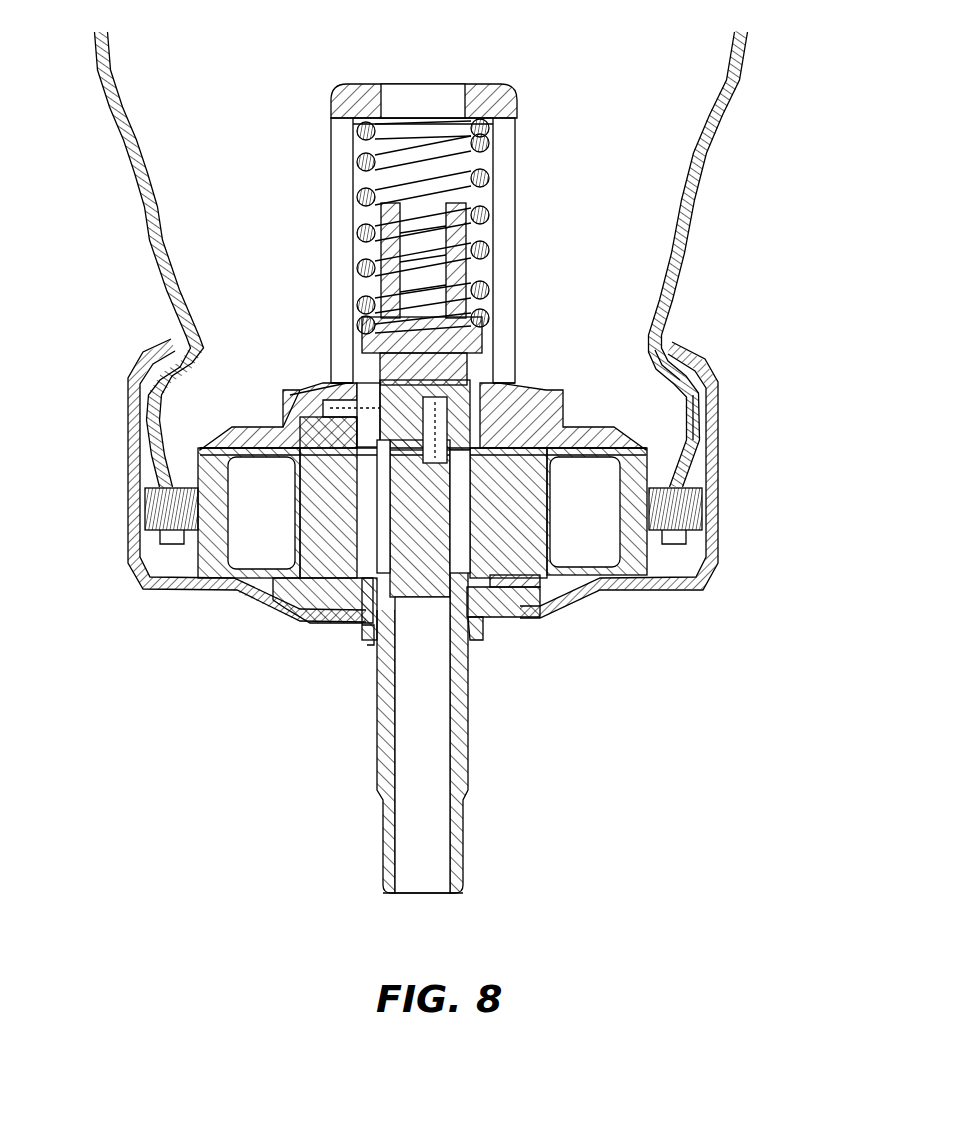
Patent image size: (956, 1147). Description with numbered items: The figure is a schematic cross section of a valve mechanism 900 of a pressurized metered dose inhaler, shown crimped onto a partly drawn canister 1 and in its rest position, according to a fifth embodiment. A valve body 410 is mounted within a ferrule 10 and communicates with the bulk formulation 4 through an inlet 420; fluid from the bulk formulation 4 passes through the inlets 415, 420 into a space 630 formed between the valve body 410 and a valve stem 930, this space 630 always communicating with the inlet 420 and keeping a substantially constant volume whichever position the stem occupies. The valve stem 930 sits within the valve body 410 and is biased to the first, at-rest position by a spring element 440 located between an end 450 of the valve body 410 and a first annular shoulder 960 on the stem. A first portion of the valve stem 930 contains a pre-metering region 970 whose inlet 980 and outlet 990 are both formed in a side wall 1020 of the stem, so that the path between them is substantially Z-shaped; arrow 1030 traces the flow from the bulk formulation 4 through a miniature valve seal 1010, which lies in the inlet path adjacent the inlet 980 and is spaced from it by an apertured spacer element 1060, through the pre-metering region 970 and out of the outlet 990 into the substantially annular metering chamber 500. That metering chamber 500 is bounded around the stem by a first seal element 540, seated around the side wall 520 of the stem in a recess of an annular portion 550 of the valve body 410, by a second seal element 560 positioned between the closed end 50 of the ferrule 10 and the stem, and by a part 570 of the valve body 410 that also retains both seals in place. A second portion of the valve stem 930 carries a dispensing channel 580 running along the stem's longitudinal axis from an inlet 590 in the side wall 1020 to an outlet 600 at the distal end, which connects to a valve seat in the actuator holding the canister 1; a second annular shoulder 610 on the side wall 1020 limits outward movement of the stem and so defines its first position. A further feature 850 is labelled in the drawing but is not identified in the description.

The canister 1 is at (700, 200).
The bulk formulation 4 is at (244, 221).
The ferrule 10 is at (700, 560).
The closed end 50 is at (502, 632).
The valve body 410 is at (507, 145).
The inlet 415 is at (345, 192).
The inlet 420 is at (418, 82).
The spring element 440 is at (492, 183).
The end 450 is at (360, 78).
The metering chamber 500 is at (490, 487).
The side wall 520 is at (652, 338).
The first seal element 540 is at (693, 443).
The annular portion 550 is at (340, 408).
The second seal element 560 is at (340, 615).
The part 570 is at (463, 473).
The dispensing channel 580 is at (430, 739).
The inlet 590 is at (372, 647).
The outlet 600 is at (425, 893).
The second annular shoulder 610 is at (365, 613).
The space 630 is at (478, 380).
The inner slot 850 is at (620, 450).
The valve mechanism 900 is at (540, 74).
The valve stem 930 is at (446, 362).
The first annular shoulder 960 is at (488, 336).
The pre-metering region 970 is at (560, 400).
The inlet 980 is at (346, 398).
The outlet 990 is at (482, 618).
The miniature valve seal 1010 is at (300, 565).
The side wall 1020 is at (478, 718).
The arrow 1030 is at (343, 383).
The spacer element 1060 is at (192, 500).